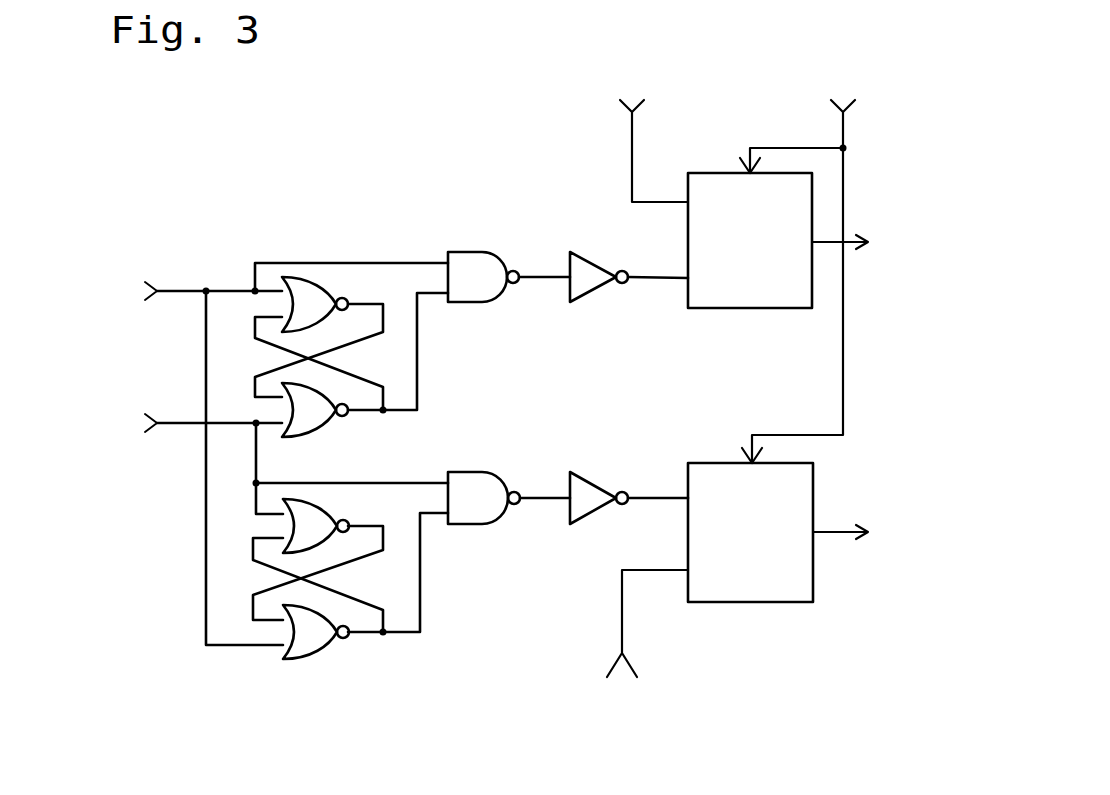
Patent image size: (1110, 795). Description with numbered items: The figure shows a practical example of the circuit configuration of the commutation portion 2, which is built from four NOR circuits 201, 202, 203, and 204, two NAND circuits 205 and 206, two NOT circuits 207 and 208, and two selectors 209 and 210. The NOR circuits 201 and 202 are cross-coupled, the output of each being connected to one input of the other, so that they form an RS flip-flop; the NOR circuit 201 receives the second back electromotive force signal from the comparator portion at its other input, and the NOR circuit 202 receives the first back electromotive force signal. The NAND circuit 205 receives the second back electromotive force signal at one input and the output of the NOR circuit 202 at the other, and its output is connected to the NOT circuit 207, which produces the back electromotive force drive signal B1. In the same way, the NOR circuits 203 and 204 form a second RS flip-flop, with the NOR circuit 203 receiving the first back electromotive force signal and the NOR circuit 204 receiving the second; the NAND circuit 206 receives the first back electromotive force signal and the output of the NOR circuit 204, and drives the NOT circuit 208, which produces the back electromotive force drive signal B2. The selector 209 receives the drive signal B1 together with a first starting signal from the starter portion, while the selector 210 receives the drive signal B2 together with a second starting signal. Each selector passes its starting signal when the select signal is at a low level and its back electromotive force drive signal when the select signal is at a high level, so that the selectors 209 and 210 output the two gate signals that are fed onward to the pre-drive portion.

The commutation portion 2 is at (545, 732).
The NOR circuit 201 is at (300, 284).
The NOR circuit 202 is at (296, 430).
The NOR circuit 203 is at (300, 508).
The NOR circuit 204 is at (312, 641).
The NAND circuit 205 is at (480, 253).
The NAND circuit 206 is at (464, 486).
The NOT circuit 207 is at (590, 270).
The NOT circuit 208 is at (590, 490).
The selector 209 is at (775, 295).
The selector 210 is at (762, 592).
The back electromotive force drive signal B1 is at (672, 280).
The back electromotive force drive signal B2 is at (672, 498).